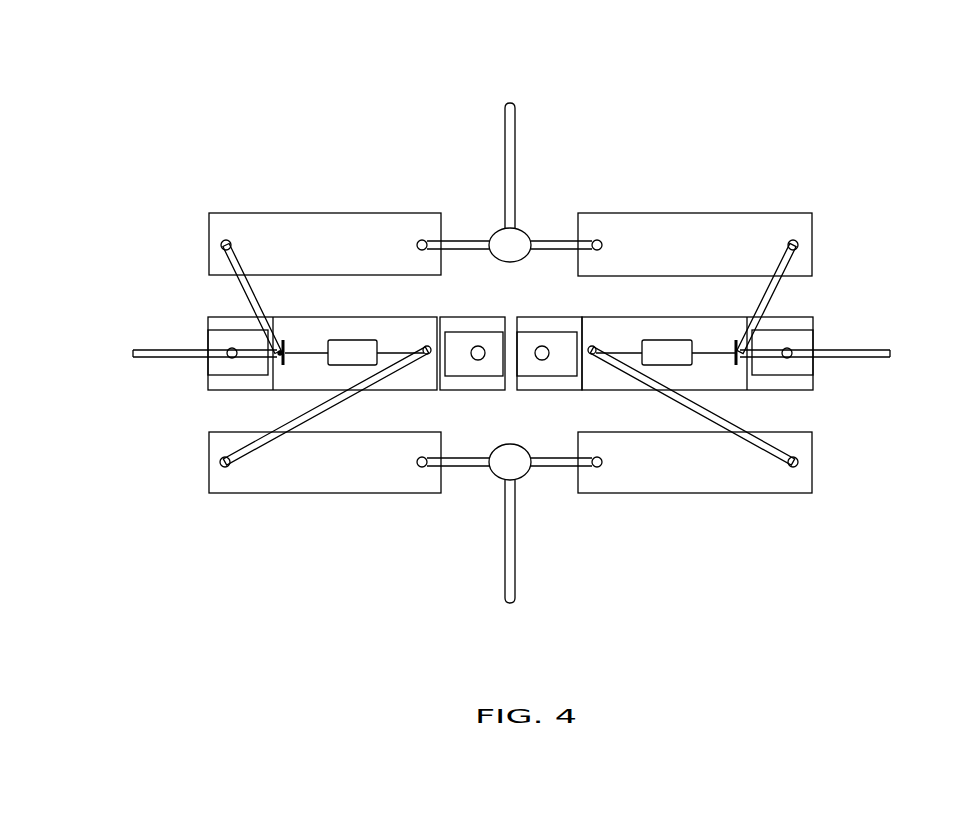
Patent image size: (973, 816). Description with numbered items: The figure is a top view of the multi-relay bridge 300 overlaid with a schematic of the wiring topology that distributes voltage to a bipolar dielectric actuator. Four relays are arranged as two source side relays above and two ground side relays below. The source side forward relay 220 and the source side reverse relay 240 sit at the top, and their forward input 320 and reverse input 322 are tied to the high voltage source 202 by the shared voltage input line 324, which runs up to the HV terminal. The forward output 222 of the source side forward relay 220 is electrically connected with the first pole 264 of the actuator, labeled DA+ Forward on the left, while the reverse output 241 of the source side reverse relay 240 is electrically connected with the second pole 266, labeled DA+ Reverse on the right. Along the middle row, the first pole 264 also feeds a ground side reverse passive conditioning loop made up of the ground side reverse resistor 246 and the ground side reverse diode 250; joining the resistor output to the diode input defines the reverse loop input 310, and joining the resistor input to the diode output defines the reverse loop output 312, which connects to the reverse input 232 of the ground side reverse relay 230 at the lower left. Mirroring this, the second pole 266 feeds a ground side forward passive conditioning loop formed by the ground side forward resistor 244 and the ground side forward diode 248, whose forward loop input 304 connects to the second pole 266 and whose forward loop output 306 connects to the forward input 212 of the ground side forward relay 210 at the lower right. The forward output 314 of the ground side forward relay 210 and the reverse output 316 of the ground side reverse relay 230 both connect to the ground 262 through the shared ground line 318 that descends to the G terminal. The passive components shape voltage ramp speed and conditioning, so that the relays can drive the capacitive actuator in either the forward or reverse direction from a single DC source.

The multi-relay bridge 300 is at (843, 66).
The high voltage source 202 is at (494, 83).
The shared voltage input line 324 is at (515, 147).
The source side forward relay 220 is at (293, 213).
The forward output 222 is at (222, 238).
The forward input 320 is at (420, 237).
The reverse input 322 is at (600, 240).
The source side reverse relay 240 is at (727, 213).
The reverse output 241 is at (797, 240).
The first pole 264 is at (86, 322).
The reverse loop input 310 is at (268, 378).
The ground side reverse resistor 246 is at (350, 338).
The reverse loop output 312 is at (427, 358).
The ground side reverse diode 250 is at (442, 318).
The ground side forward diode 248 is at (577, 317).
The forward loop output 306 is at (592, 358).
The ground side forward resistor 244 is at (672, 338).
The forward loop input 304 is at (752, 378).
The second pole 266 is at (937, 322).
The ground side reverse relay 230 is at (293, 493).
The reverse input 232 is at (222, 470).
The reverse output 316 is at (420, 470).
The forward output 314 is at (600, 470).
The ground side forward relay 210 is at (727, 493).
The forward input 212 is at (797, 470).
The shared ground line 318 is at (515, 557).
The ground 262 is at (497, 627).